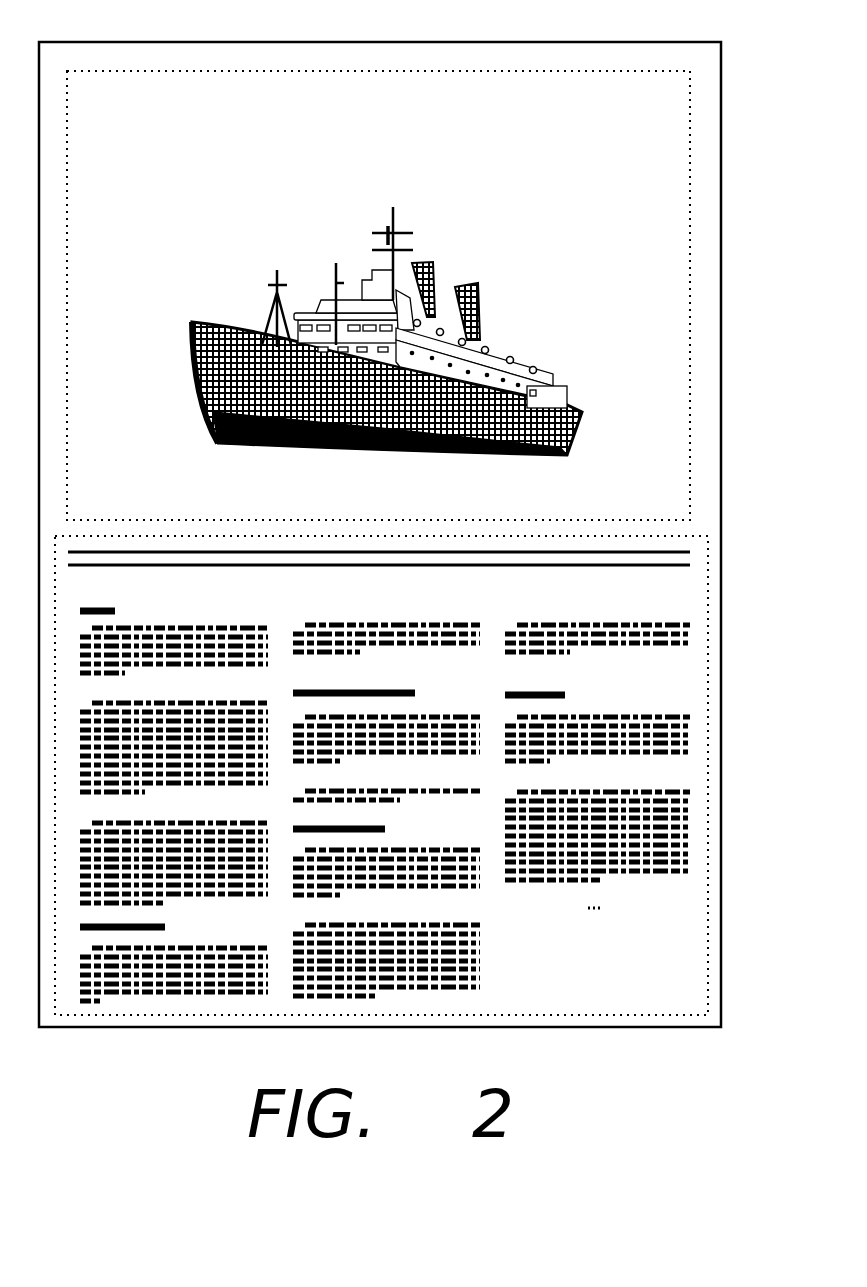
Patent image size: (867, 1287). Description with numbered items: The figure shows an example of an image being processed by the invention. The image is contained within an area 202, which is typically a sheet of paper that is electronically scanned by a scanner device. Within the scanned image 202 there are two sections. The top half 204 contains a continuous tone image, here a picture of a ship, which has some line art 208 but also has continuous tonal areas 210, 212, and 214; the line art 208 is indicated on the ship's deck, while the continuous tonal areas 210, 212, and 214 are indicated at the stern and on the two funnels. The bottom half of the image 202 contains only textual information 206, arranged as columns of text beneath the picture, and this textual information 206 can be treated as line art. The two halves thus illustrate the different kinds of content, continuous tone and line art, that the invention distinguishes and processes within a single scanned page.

The area 202 is at (432, 43).
The top half 204 is at (690, 237).
The textual information 206 is at (706, 642).
The line art 208 is at (547, 376).
The continuous tonal area 210 is at (597, 403).
The continuous tonal area 212 is at (453, 250).
The continuous tonal area 214 is at (480, 290).